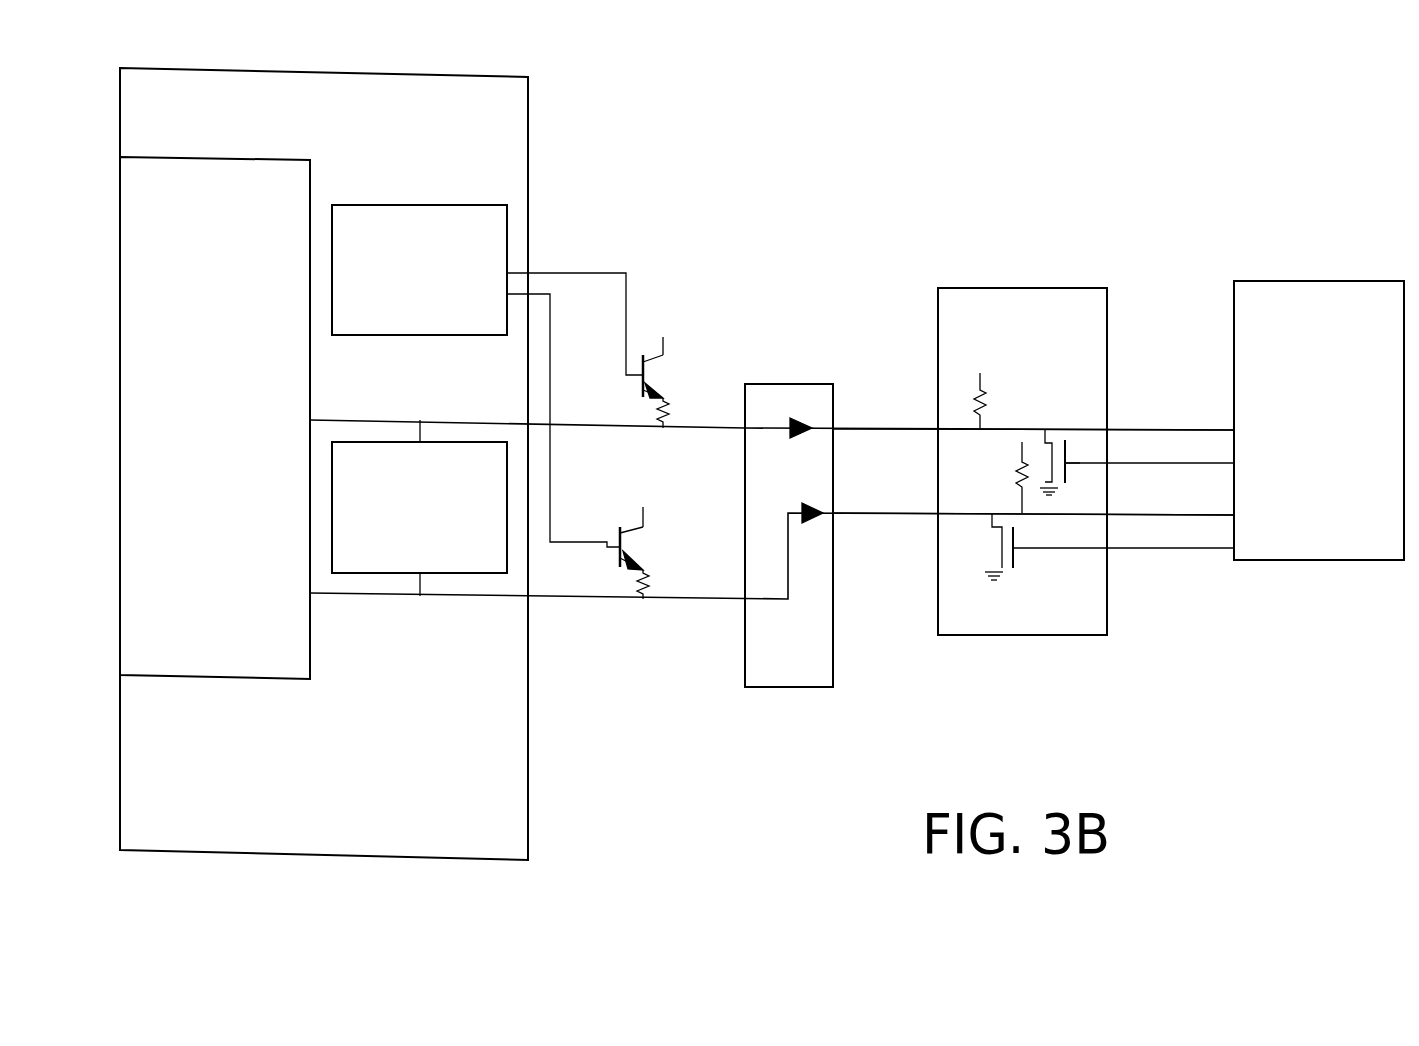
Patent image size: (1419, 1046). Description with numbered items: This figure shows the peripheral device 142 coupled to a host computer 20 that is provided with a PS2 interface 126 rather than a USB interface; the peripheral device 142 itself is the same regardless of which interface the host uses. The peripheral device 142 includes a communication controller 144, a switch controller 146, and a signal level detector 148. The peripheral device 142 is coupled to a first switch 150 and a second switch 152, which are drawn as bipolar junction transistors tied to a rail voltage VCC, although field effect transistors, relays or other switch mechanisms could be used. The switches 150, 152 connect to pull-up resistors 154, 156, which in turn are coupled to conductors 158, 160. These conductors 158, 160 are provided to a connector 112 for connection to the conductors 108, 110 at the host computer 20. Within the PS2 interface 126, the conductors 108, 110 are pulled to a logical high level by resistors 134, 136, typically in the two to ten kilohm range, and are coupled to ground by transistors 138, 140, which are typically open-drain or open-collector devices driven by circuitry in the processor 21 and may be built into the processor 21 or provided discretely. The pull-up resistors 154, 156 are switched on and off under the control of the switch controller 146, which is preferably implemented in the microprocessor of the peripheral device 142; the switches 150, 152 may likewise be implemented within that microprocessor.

The host computer 20 is at (1152, 168).
The processor 21 is at (1319, 420).
The conductor 108 is at (873, 427).
The conductor 110 is at (875, 515).
The connector 112 is at (785, 687).
The PS2 interface 126 is at (1086, 461).
The resistor 134 is at (977, 398).
The resistor 136 is at (1022, 478).
The transistor 138 is at (1065, 440).
The transistor 140 is at (1000, 572).
The peripheral device 142 is at (528, 98).
The communication controller 144 is at (215, 418).
The switch controller 146 is at (419, 270).
The signal level detector 148 is at (419, 508).
The first switch 150 is at (663, 360).
The second switch 152 is at (643, 535).
The pull-up resistor 154 is at (673, 405).
The pull-up resistor 156 is at (647, 573).
The conductor 158 is at (572, 423).
The conductor 160 is at (572, 600).